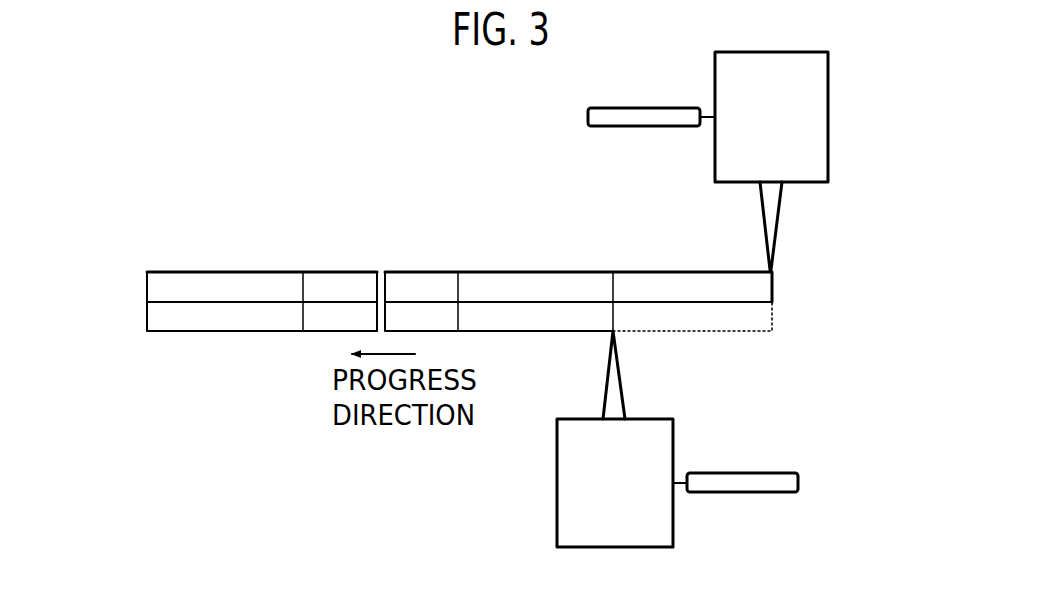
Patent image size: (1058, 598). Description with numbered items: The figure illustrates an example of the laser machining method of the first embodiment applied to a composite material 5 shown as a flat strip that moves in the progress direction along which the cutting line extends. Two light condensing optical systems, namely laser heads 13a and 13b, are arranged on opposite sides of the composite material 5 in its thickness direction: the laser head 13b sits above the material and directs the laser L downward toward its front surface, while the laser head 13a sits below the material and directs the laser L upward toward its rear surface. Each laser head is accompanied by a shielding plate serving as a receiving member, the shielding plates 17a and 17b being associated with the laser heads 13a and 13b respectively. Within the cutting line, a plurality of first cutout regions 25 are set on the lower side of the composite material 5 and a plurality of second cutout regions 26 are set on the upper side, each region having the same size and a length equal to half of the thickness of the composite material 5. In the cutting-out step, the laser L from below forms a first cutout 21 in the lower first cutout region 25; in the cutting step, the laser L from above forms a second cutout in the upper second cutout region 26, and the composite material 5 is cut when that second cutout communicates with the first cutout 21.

The composite material 5 is at (422, 281).
The first cutout region 25 is at (142, 318).
The second cutout region 26 is at (142, 285).
The first cutout 21 is at (733, 303).
The light condensing optical system (laser head) 13a is at (674, 521).
The light condensing optical system (laser head) 13b is at (829, 117).
The shielding plate (receiving member) 17a is at (799, 481).
The shielding plate (receiving member) 17b is at (636, 108).
The laser L is at (783, 214).